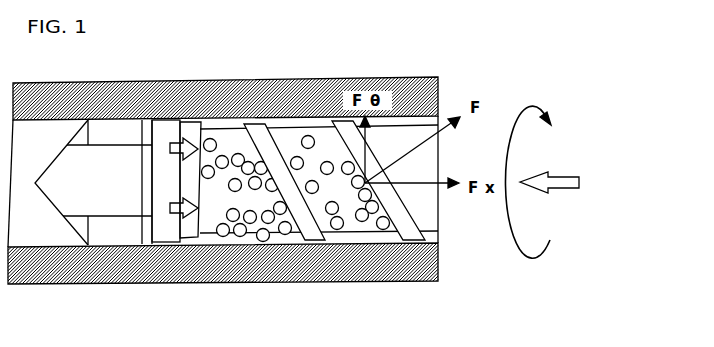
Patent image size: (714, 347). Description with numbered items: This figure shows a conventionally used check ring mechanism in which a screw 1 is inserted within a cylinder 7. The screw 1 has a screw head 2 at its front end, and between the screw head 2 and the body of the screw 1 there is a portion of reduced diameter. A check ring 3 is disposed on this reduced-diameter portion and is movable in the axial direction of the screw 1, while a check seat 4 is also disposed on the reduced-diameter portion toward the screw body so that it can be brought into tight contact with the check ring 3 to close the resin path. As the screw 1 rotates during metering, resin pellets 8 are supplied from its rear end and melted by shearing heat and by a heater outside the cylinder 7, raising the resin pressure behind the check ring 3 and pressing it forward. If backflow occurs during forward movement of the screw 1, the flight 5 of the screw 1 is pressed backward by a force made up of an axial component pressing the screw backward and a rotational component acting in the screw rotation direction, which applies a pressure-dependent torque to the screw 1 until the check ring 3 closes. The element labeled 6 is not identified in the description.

The screw 1 is at (297, 145).
The screw head 2 is at (108, 142).
The check ring 3 is at (161, 232).
The check seat 4 is at (189, 235).
The flight 5 is at (395, 226).
The inclined plate 6 is at (298, 233).
The cylinder 7 is at (156, 92).
The resin pellets 8 is at (260, 240).